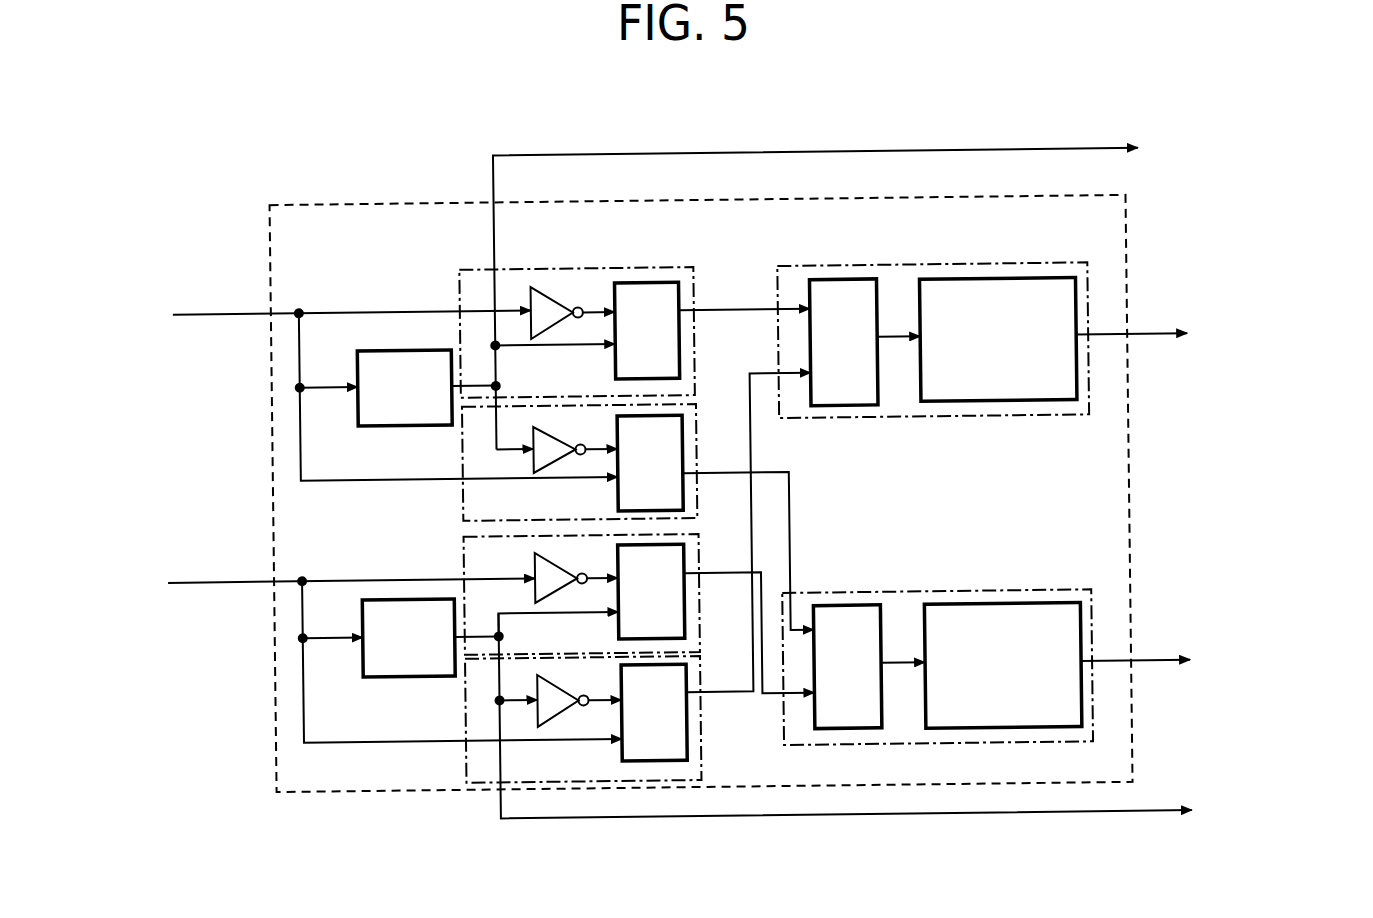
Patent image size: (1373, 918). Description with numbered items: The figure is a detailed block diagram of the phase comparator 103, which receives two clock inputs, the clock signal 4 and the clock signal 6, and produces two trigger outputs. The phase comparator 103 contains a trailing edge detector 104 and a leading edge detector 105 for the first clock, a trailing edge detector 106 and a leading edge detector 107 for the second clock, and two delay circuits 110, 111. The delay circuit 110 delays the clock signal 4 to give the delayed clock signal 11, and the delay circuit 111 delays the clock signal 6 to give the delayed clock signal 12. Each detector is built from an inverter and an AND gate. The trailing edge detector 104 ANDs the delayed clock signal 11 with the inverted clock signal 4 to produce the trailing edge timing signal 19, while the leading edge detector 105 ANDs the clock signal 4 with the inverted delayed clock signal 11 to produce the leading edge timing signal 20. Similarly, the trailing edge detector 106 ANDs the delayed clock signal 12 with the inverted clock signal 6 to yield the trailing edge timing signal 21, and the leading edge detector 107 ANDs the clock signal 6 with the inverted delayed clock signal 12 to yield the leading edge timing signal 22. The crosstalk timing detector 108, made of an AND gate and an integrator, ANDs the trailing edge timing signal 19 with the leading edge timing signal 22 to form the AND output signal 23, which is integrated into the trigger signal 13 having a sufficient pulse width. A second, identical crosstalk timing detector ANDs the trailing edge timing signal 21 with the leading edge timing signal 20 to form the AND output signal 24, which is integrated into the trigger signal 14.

The clock signal 4 is at (335, 387).
The clock signal 6 is at (337, 654).
The delayed clock signal 11 is at (858, 293).
The delayed clock signal 12 is at (862, 722).
The trigger signal 13 is at (1213, 338).
The trigger signal 14 is at (1217, 662).
The trailing edge timing signal 19 is at (714, 306).
The leading edge timing signal 20 is at (715, 472).
The trailing edge timing signal 21 is at (714, 572).
The leading edge timing signal 22 is at (716, 690).
The AND output signal 23 is at (892, 337).
The AND output signal 24 is at (891, 662).
The phase comparator 103 is at (349, 189).
The trailing edge detector 104 is at (513, 266).
The leading edge detector 105 is at (462, 505).
The trailing edge detector 106 is at (463, 557).
The leading edge detector 107 is at (462, 767).
The crosstalk timing detector 108 is at (978, 268).
The delay circuit 110 is at (382, 347).
The delay circuit 111 is at (364, 596).